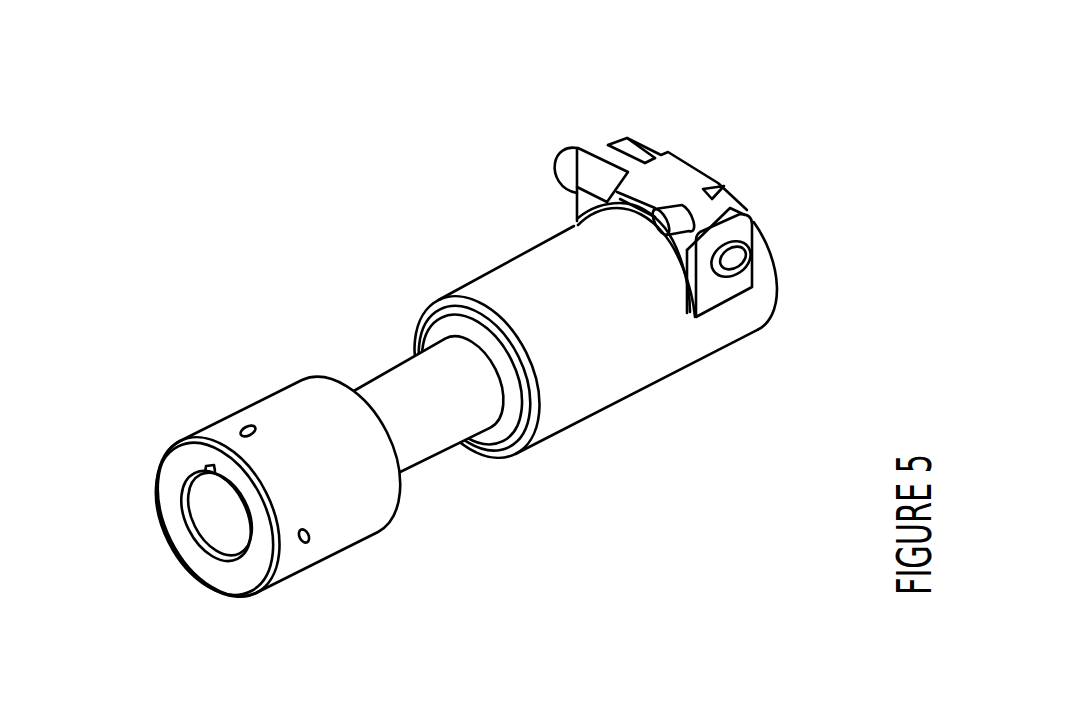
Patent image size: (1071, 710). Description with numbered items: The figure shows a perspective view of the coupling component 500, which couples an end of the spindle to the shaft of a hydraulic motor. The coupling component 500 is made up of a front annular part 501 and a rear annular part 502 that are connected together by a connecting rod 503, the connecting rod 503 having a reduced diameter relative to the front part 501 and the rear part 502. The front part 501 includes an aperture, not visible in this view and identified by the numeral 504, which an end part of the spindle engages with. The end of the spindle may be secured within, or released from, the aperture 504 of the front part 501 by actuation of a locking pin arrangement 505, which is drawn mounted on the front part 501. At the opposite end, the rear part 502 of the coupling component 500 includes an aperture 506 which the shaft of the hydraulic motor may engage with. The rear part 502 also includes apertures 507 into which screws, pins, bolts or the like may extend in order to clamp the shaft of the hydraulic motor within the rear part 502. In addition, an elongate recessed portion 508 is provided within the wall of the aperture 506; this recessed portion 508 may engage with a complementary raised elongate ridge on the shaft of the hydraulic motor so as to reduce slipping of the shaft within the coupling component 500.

The coupling component 500 is at (476, 337).
The front annular part 501 is at (673, 355).
The rear annular part 502 is at (215, 472).
The connecting rod 503 is at (432, 432).
The aperture 504 is at (768, 228).
The locking pin arrangement 505 is at (660, 108).
The aperture 506 is at (224, 503).
The apertures 507 is at (302, 530).
The elongate recessed portion 508 is at (212, 468).